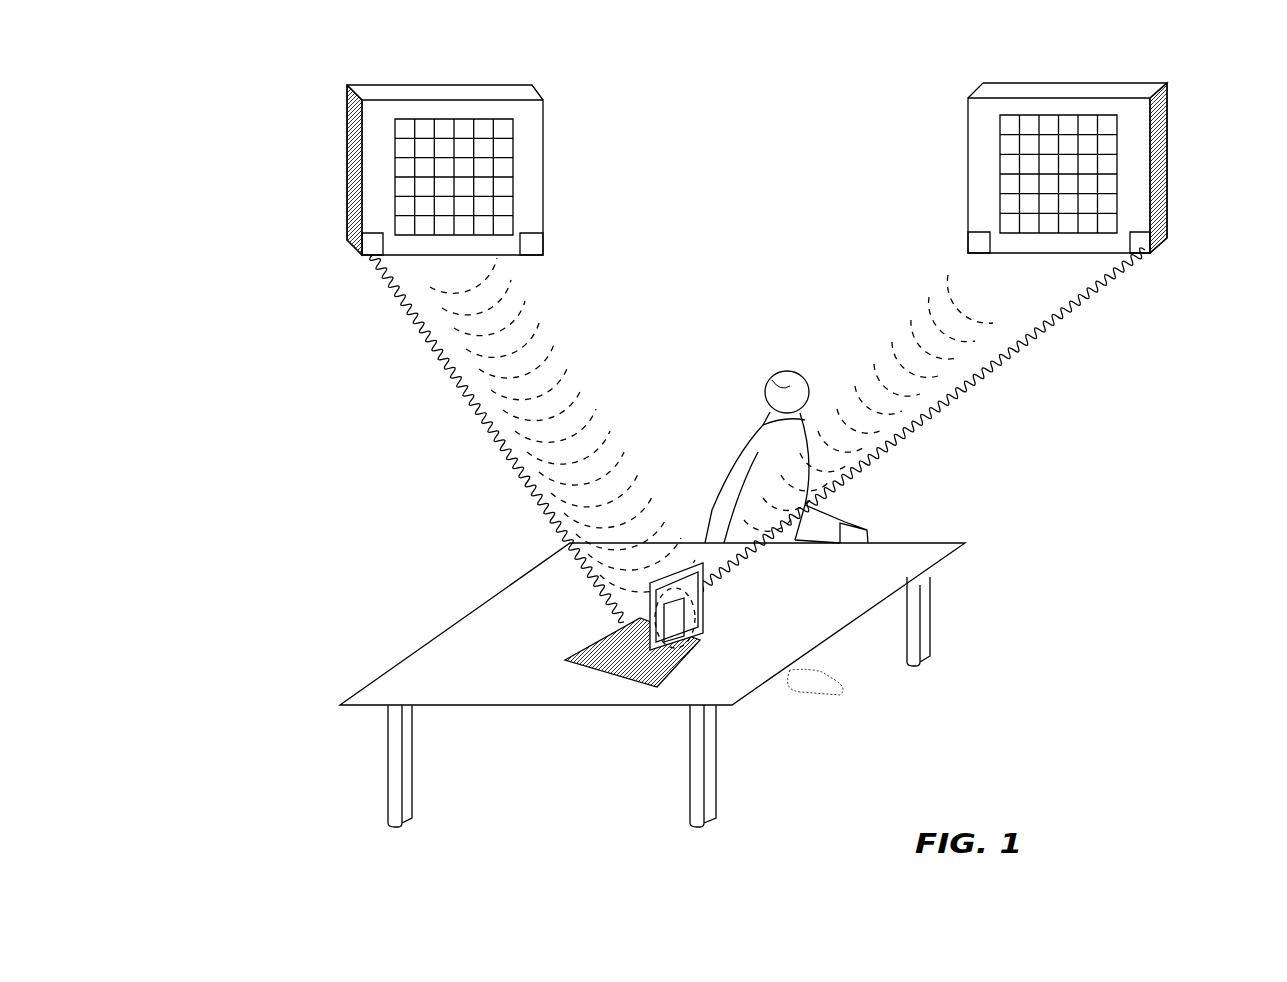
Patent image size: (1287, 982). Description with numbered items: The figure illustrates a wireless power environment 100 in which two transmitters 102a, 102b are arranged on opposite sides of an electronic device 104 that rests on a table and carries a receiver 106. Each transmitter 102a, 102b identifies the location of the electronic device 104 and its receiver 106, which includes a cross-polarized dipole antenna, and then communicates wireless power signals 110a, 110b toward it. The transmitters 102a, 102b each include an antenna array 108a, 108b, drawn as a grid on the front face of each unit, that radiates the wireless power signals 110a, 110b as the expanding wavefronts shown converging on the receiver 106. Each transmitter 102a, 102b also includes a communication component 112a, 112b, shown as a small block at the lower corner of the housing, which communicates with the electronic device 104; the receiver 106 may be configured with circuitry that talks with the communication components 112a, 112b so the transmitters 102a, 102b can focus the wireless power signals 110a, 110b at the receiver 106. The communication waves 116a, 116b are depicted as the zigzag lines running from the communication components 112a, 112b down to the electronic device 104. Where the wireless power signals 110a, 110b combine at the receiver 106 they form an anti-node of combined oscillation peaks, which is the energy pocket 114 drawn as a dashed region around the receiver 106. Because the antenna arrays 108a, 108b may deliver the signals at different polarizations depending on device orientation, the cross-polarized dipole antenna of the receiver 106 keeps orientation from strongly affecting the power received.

The wireless power environment 100 is at (246, 88).
The transmitter 102a is at (347, 167).
The transmitter 102b is at (968, 167).
The electronic device 104 is at (568, 662).
The receiver 106 is at (693, 622).
The antenna array 108a is at (502, 148).
The antenna array 108b is at (1113, 145).
The wireless power signals 110a is at (575, 387).
The wireless power signals 110b is at (887, 343).
The communication component 112a is at (362, 245).
The communication component 112b is at (1145, 240).
The energy pocket 114 is at (683, 650).
The communication waves 116a is at (453, 368).
The communication waves 116b is at (1003, 367).